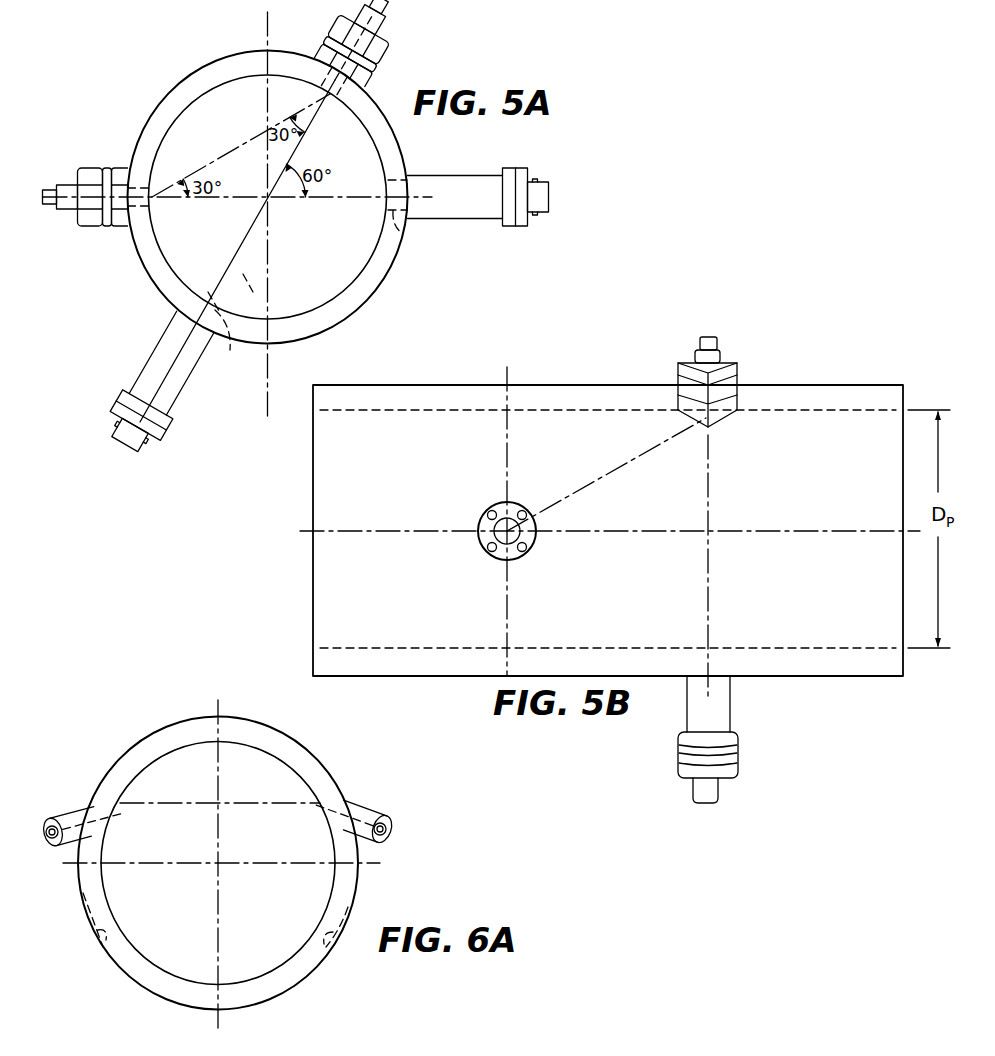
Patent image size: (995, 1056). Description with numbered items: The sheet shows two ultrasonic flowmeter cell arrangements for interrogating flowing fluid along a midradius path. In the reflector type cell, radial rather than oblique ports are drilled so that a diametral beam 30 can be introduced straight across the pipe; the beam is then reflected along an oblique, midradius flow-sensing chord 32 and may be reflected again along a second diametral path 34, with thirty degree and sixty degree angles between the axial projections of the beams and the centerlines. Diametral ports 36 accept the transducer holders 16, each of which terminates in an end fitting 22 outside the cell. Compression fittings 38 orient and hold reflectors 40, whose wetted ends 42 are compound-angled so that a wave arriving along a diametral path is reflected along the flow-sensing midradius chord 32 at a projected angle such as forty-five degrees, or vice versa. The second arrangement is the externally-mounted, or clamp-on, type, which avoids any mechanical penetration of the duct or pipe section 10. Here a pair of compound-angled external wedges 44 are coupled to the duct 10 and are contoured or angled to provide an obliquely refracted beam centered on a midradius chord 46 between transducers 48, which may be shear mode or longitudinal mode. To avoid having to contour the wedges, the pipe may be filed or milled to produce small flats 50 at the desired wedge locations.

In FIG. 5B, the pipe section 10 is at (313, 625).
In FIG. 6A, the pipe section 10 is at (358, 882).
In FIG. 5A, the transducer holder 16 is at (465, 183).
In FIG. 5B, the transducer holder 16 is at (723, 713).
In FIG. 5A, the tube end fitting 22 is at (533, 177).
In FIG. 5B, the tube end fitting 22 is at (718, 790).
In FIG. 5A, the diametral beam 30 is at (329, 199).
In FIG. 5A, the midradius flow-sensing chord 32 is at (226, 147).
In FIG. 5B, the midradius flow-sensing chord 32 is at (623, 468).
In FIG. 5A, the second diametral path 34 is at (233, 258).
In FIG. 5B, the second diametral path 34 is at (709, 488).
In FIG. 5A, the diametral port 36 is at (402, 233).
In FIG. 5A, the compression fitting 38 is at (105, 170).
In FIG. 5A, the reflector 40 is at (66, 184).
In FIG. 5B, the reflector 40 is at (720, 344).
In FIG. 5A, the wetted end 42 is at (150, 203).
In FIG. 6A, the compound-angled external wedge 44 is at (74, 811).
In FIG. 6A, the midradius chord 46 is at (228, 805).
In FIG. 6A, the transducer 48 is at (53, 840).
In FIG. 6A, the flat 50 is at (103, 947).